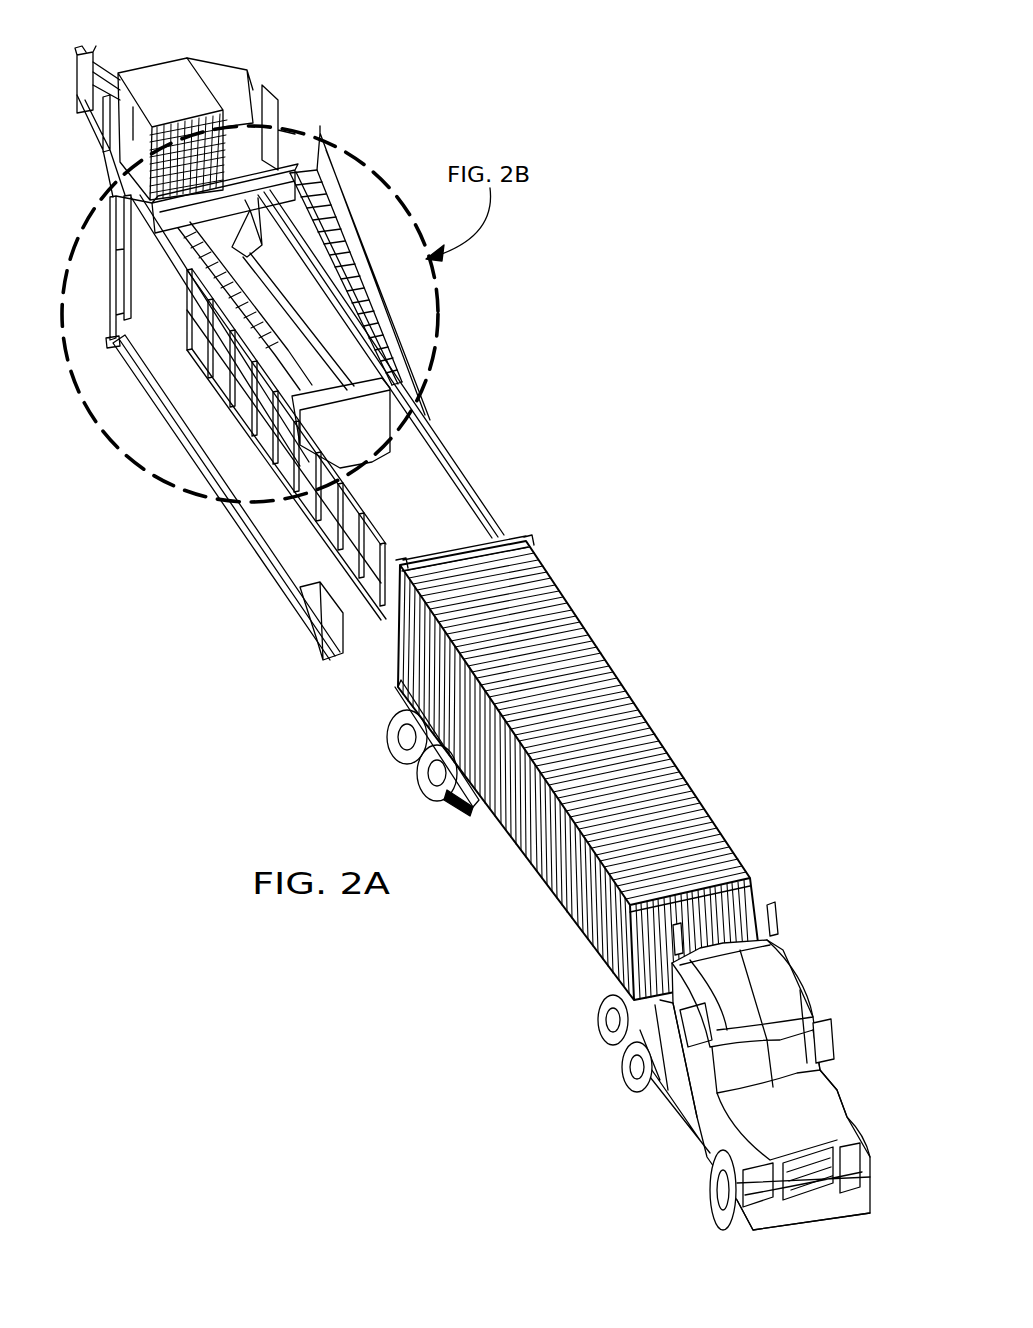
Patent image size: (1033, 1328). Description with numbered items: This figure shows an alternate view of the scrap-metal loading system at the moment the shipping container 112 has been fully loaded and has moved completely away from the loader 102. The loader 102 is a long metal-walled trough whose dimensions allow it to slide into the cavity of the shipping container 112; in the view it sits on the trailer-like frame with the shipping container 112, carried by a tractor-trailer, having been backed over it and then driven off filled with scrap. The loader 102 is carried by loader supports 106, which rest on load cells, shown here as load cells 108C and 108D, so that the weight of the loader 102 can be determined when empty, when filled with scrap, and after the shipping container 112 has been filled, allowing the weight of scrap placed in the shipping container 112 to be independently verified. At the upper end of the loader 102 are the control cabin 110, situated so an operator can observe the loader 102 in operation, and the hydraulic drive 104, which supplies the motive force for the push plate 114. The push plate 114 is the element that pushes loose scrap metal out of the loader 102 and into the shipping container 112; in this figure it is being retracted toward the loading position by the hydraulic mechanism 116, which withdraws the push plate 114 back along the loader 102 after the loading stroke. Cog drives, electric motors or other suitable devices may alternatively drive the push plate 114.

The loader 102 is at (460, 470).
The hydraulic drive 104 is at (98, 128).
The loader supports 106 is at (266, 560).
The ramp end support 108C is at (327, 660).
The support post 108D is at (112, 345).
The control cabin 110 is at (158, 62).
The shipping container 112 is at (657, 735).
The push plate 114 is at (405, 418).
The hydraulic mechanism 116 is at (270, 330).